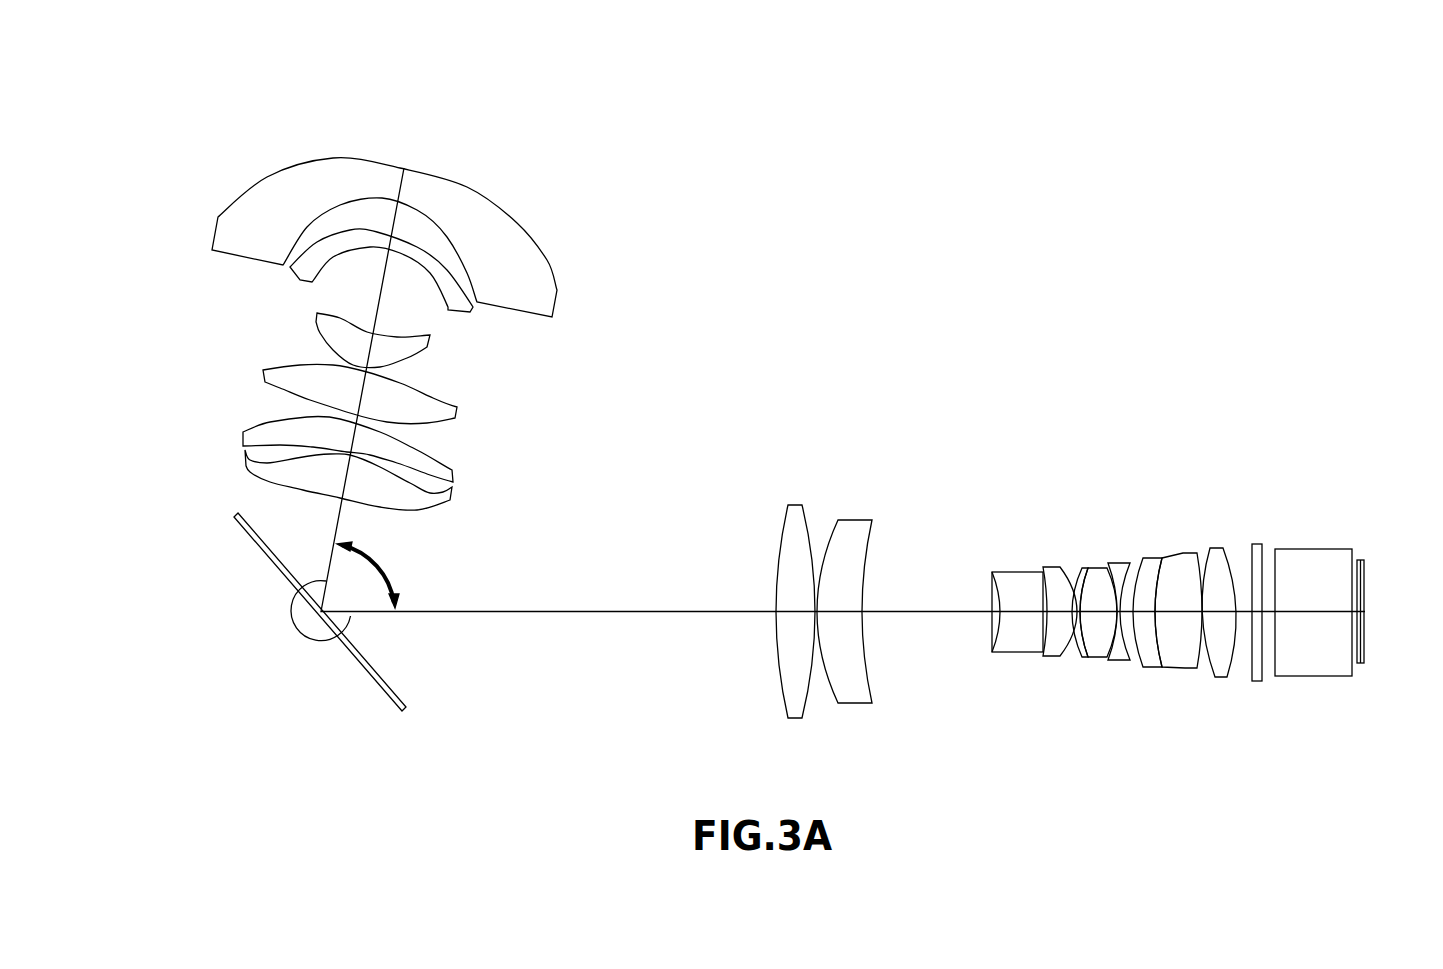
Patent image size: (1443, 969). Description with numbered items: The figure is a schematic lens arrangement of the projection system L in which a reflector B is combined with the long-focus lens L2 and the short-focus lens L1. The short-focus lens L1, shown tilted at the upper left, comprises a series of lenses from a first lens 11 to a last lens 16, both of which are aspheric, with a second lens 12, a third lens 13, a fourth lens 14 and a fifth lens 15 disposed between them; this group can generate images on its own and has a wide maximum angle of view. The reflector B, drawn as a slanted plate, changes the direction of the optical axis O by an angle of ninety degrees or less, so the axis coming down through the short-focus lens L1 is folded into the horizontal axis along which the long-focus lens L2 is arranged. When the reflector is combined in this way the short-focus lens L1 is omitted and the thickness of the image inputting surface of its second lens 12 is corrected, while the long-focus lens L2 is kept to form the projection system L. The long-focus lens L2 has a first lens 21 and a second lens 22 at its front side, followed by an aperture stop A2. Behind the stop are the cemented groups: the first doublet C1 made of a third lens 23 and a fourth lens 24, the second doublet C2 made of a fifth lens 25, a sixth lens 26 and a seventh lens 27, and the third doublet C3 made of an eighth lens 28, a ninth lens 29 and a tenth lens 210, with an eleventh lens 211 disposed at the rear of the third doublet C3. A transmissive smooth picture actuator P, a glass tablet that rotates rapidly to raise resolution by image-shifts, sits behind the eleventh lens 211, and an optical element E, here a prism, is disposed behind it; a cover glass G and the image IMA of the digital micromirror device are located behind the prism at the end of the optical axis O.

The first lens 11 is at (237, 220).
The second lens 12 is at (298, 276).
The third lens 13 is at (330, 332).
The fourth lens 14 is at (280, 378).
The fifth lens 15 is at (253, 440).
The last lens 16 is at (250, 463).
The first lens 21 is at (795, 508).
The second lens 22 is at (855, 523).
The third lens 23 is at (1012, 577).
The fourth lens 24 is at (1050, 573).
The fifth lens 25 is at (1087, 573).
The sixth lens 26 is at (1100, 577).
The seventh lens 27 is at (1120, 563).
The eighth lens 28 is at (1150, 560).
The ninth lens 29 is at (1170, 560).
The tenth lens 210 is at (1193, 557).
The eleventh lens 211 is at (1257, 547).
The reflector B is at (262, 558).
The optical axis O is at (294, 631).
The aperture stop A2 is at (990, 597).
The transmissive smooth picture actuator P is at (1337, 555).
The optical element E is at (1360, 558).
The cover glass G is at (1363, 562).
The image IMA is at (1365, 598).
The projection system L is at (151, 77).
The short-focus lens L1 is at (137, 178).
The long-focus lens L2 is at (1422, 430).
The first doublet C1 is at (1033, 485).
The second doublet C2 is at (1153, 485).
The third doublet C3 is at (1270, 485).